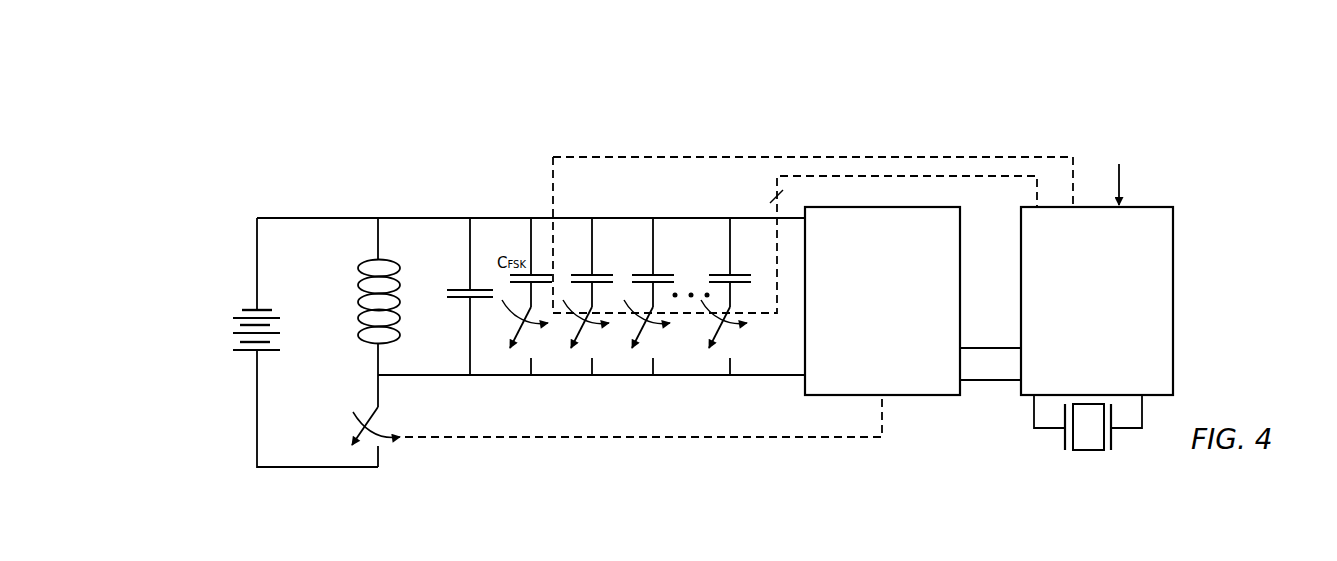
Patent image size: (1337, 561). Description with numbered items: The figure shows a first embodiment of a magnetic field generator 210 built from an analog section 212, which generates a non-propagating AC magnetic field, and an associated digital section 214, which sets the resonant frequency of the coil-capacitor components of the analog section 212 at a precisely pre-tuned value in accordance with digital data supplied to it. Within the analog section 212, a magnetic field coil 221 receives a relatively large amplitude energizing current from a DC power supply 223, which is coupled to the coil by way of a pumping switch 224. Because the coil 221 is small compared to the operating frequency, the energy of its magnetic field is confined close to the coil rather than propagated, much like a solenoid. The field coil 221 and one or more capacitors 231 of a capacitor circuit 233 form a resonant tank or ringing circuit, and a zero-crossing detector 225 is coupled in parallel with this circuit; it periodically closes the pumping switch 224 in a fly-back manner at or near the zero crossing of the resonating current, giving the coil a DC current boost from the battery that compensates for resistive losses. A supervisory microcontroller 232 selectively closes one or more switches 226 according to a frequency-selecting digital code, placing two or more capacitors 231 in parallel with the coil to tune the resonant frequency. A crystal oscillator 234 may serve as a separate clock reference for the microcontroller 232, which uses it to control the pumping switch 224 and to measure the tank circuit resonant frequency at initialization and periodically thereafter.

The magnetic field generating circuit 210 is at (955, 105).
The analog section 212 is at (995, 147).
The digital section 214 is at (1208, 138).
The magnetic field coil 221 is at (389, 278).
The DC power supply 223 is at (234, 334).
The pumping switch 224 is at (373, 438).
The zero-crossing detector 225 is at (912, 382).
The switches 226 is at (728, 345).
The capacitors 231 is at (467, 302).
The supervisory microcontroller 232 is at (1174, 319).
The capacitor circuit 233 is at (670, 360).
The crystal oscillator 234 is at (1085, 450).